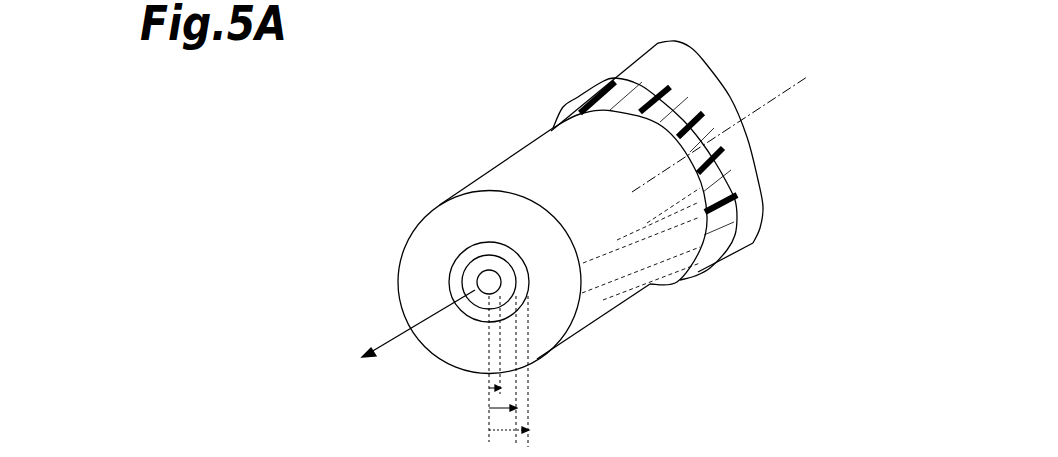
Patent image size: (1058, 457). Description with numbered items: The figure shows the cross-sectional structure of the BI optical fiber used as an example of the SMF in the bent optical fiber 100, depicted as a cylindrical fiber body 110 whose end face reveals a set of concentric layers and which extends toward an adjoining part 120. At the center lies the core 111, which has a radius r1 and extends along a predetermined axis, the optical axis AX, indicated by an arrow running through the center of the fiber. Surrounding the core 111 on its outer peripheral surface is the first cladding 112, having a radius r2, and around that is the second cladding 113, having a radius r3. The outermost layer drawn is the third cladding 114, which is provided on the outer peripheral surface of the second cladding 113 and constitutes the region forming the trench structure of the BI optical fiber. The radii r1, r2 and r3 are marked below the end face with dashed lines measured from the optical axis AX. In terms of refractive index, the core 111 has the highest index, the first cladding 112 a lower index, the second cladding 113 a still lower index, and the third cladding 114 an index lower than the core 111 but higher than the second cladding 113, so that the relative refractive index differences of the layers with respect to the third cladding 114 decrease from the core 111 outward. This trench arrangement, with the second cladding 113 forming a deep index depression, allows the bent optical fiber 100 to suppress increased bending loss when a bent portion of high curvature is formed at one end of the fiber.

The bent optical fiber 100 is at (508, 110).
The optical fiber cable 110 is at (322, 201).
The core 111 is at (478, 279).
The first cladding 112 is at (472, 275).
The second cladding 113 is at (466, 252).
The third cladding 114 is at (452, 208).
The ferrule / connector 120 is at (580, 98).
The optical axis AX is at (562, 228).
The radius of the core r1 is at (489, 387).
The radius of the first cladding r2 is at (489, 407).
The radius of the second cladding r3 is at (509, 376).